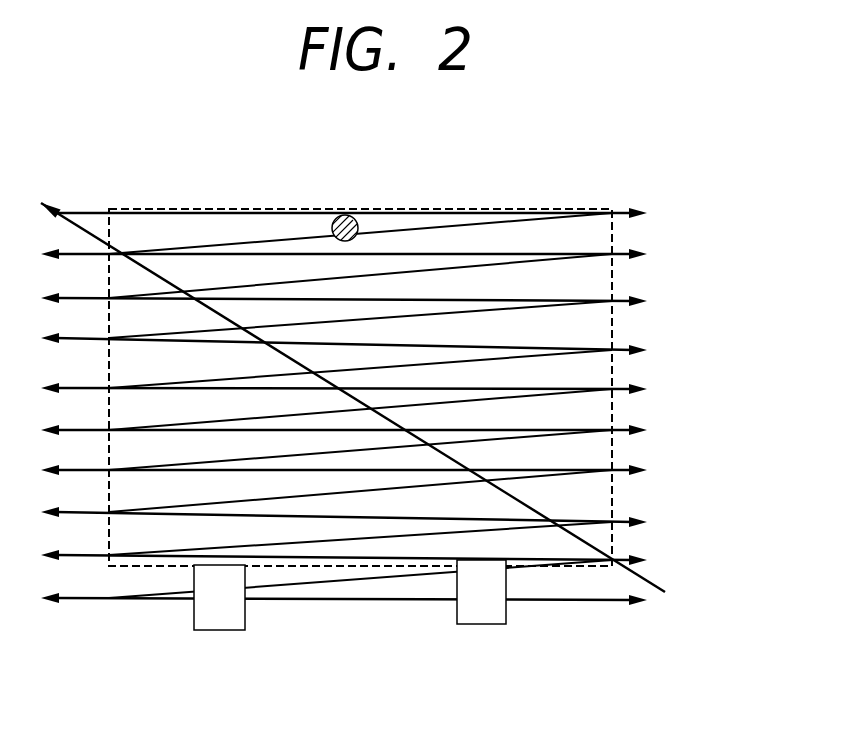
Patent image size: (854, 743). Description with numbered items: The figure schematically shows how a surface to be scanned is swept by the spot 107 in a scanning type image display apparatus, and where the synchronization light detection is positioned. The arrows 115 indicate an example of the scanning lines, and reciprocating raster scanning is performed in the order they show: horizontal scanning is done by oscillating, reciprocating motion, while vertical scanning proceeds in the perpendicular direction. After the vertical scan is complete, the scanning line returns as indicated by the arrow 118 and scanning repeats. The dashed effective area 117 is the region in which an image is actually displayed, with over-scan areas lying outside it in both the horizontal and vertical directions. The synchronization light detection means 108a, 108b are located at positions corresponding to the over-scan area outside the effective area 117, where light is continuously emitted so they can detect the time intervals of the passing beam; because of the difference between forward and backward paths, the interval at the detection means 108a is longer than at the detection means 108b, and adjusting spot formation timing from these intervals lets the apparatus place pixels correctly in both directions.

The spot 107 is at (345, 215).
The synchronization light detection means 108a is at (220, 630).
The synchronization light detection means 108b is at (482, 624).
The scanning lines 115 is at (620, 300).
The effective area 117 is at (612, 503).
The return arrow 118 is at (95, 233).